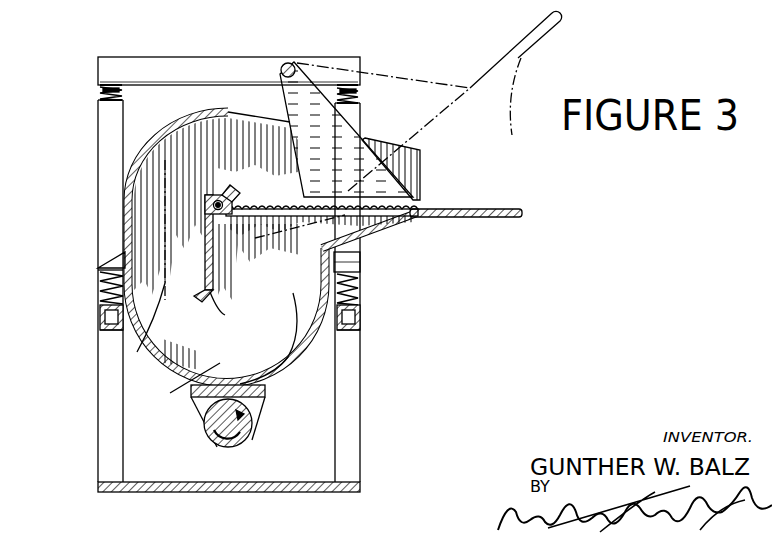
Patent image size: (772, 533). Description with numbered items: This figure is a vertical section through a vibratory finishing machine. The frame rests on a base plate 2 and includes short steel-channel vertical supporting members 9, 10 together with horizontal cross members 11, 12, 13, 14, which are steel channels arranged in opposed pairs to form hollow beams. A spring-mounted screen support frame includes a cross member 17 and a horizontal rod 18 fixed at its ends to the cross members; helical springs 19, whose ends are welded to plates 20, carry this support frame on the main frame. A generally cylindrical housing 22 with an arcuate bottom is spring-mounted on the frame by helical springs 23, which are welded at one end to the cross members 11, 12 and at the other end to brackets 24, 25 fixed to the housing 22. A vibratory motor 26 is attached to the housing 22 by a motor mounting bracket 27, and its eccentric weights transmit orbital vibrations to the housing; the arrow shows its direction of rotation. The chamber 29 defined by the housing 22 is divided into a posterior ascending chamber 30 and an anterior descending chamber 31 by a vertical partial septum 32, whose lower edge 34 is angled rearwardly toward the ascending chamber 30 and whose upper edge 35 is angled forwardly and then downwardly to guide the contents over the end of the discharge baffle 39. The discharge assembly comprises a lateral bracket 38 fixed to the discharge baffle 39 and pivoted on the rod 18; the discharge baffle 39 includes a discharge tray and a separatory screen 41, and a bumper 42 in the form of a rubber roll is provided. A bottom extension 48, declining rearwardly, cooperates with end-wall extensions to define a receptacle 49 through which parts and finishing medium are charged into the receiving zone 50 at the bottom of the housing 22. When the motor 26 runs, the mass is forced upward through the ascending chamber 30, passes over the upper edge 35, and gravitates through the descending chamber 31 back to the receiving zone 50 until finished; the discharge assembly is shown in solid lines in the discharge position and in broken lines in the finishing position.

The base plate 2 is at (266, 492).
The vertical supporting member 9 is at (98, 424).
The vertical supporting member 10 is at (360, 445).
The horizontal cross member 11 is at (104, 312).
The horizontal cross member 12 is at (352, 314).
The horizontal cross member 13 is at (100, 324).
The horizontal cross member 14 is at (352, 324).
The cross member 17 is at (205, 73).
The horizontal rod 18 is at (290, 63).
The helical spring 19 is at (110, 100).
The plate 20 is at (112, 90).
The housing 22 is at (126, 185).
The helical spring 23 is at (102, 284).
The bracket 24 is at (114, 262).
The bracket 25 is at (340, 256).
The vibratory motor 26 is at (248, 432).
The motor mounting bracket 27 is at (268, 394).
The chamber 29 is at (176, 150).
The posterior ascending chamber 30 is at (146, 334).
The anterior descending chamber 31 is at (290, 358).
The vertical partial septum 32 is at (205, 228).
The lower edge of septum 34 is at (219, 310).
The upper edge of septum 35 is at (228, 191).
The lateral bracket 38 is at (340, 167).
The discharge baffle 39 is at (483, 201).
The screen 41 is at (284, 207).
The bumper 42 is at (222, 212).
The bottom extension 48 is at (428, 220).
The receptacle 49 is at (385, 230).
The receiving zone 50 is at (180, 392).